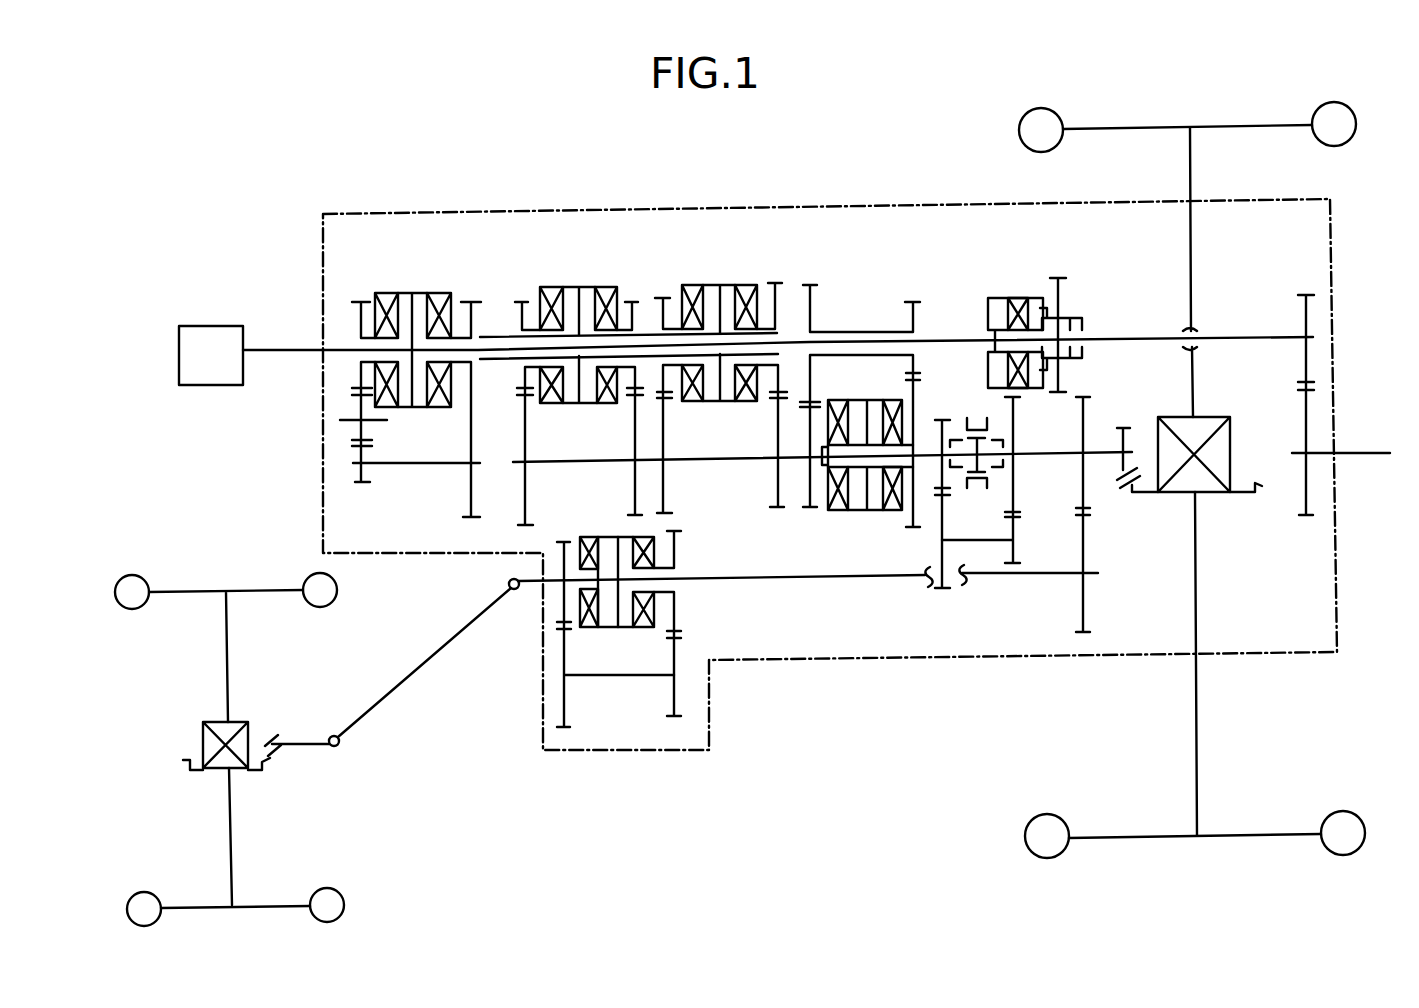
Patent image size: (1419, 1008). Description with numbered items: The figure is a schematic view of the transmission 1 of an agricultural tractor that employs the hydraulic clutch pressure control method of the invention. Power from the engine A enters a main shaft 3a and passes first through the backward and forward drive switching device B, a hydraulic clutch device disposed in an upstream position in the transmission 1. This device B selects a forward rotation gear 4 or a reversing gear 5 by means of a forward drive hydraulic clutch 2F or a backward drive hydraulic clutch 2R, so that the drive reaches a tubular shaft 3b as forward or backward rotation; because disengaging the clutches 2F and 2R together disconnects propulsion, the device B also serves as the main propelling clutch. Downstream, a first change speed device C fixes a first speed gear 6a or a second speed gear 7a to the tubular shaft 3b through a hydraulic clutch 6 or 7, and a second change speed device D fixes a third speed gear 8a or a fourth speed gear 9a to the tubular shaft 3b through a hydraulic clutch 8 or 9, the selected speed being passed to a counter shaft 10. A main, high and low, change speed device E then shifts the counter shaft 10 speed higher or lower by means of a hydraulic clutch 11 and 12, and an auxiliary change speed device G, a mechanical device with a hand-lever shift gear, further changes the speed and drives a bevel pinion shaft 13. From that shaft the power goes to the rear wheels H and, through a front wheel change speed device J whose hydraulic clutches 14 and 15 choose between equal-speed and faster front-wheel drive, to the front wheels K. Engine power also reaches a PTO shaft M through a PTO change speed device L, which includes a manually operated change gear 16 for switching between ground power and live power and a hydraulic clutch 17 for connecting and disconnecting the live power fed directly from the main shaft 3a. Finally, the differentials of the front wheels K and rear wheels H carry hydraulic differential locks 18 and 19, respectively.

The transmission 1 is at (880, 660).
The backward drive hydraulic clutch 2R is at (383, 293).
The forward drive hydraulic clutch 2F is at (440, 293).
The main shaft 3a is at (478, 347).
The tubular shaft 3b is at (498, 363).
The forward rotation gear 4 is at (463, 392).
The reversing gear 5 is at (360, 382).
The hydraulic clutch 6 is at (550, 290).
The first speed gear 6a is at (530, 392).
The hydraulic clutch 7 is at (602, 290).
The second speed gear 7a is at (623, 392).
The hydraulic clutch 8 is at (685, 290).
The third speed gear 8a is at (670, 392).
The hydraulic clutch 9 is at (745, 290).
The fourth speed gear 9a is at (770, 388).
The counter shaft 10 is at (725, 463).
The hydraulic clutch 11 is at (837, 510).
The hydraulic clutch 12 is at (892, 510).
The bevel pinion shaft 13 is at (1053, 455).
The hydraulic clutch 14 is at (589, 627).
The hydraulic clutch 15 is at (639, 626).
The change gear 16 is at (1060, 307).
The hydraulic clutch 17 is at (1013, 297).
The hydraulic differential lock 18 is at (231, 725).
The hydraulic differential lock 19 is at (1218, 470).
The engine A is at (217, 340).
The backward and forward drive switching device B is at (415, 250).
The first change speed device C is at (581, 260).
The second change speed device D is at (710, 253).
The main, high and low, change speed device E is at (860, 250).
The auxiliary change speed device G is at (962, 403).
The rear wheels H is at (1040, 137).
The front wheel change speed device J is at (617, 700).
The front wheels K is at (330, 901).
The PTO change speed device L is at (1068, 230).
The PTO shaft M is at (1360, 450).